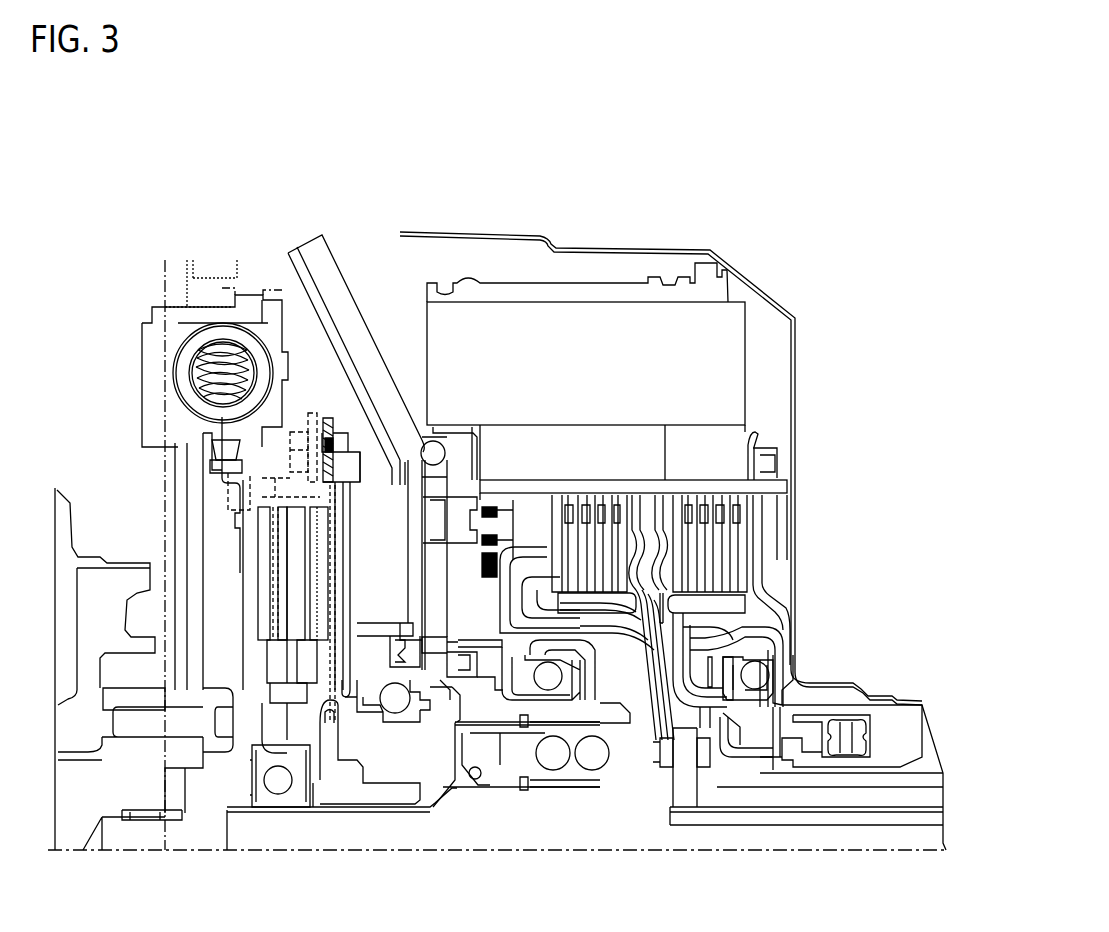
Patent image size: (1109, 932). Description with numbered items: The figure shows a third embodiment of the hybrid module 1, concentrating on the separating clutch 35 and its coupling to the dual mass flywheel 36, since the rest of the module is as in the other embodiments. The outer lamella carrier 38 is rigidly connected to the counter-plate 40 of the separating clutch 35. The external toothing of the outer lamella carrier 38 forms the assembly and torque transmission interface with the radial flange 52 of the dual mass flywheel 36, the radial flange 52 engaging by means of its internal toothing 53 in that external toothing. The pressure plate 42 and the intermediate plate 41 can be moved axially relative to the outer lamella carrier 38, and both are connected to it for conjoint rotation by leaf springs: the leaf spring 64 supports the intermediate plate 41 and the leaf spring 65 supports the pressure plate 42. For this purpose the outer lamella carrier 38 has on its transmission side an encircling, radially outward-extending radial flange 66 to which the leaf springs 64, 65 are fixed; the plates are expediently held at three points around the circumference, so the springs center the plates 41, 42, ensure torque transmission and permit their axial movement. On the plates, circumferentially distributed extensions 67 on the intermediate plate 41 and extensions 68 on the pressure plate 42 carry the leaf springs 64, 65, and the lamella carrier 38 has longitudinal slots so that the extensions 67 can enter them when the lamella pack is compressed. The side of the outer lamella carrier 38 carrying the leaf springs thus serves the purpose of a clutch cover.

The hybrid module 1 is at (580, 207).
The separating clutch 35 is at (362, 546).
The dual mass flywheel 36 is at (213, 258).
The outer lamella carrier 38 is at (277, 478).
The counter-plate 40 is at (248, 553).
The intermediate plate 41 is at (293, 602).
The pressure plate 42 is at (345, 605).
The radial flange 52 is at (225, 448).
The internal toothing 53 is at (228, 467).
The leaf spring 64 is at (327, 418).
The leaf spring 65 is at (331, 438).
The radial flange 66 is at (313, 413).
The extension 67 is at (307, 423).
The extension 68 is at (346, 440).